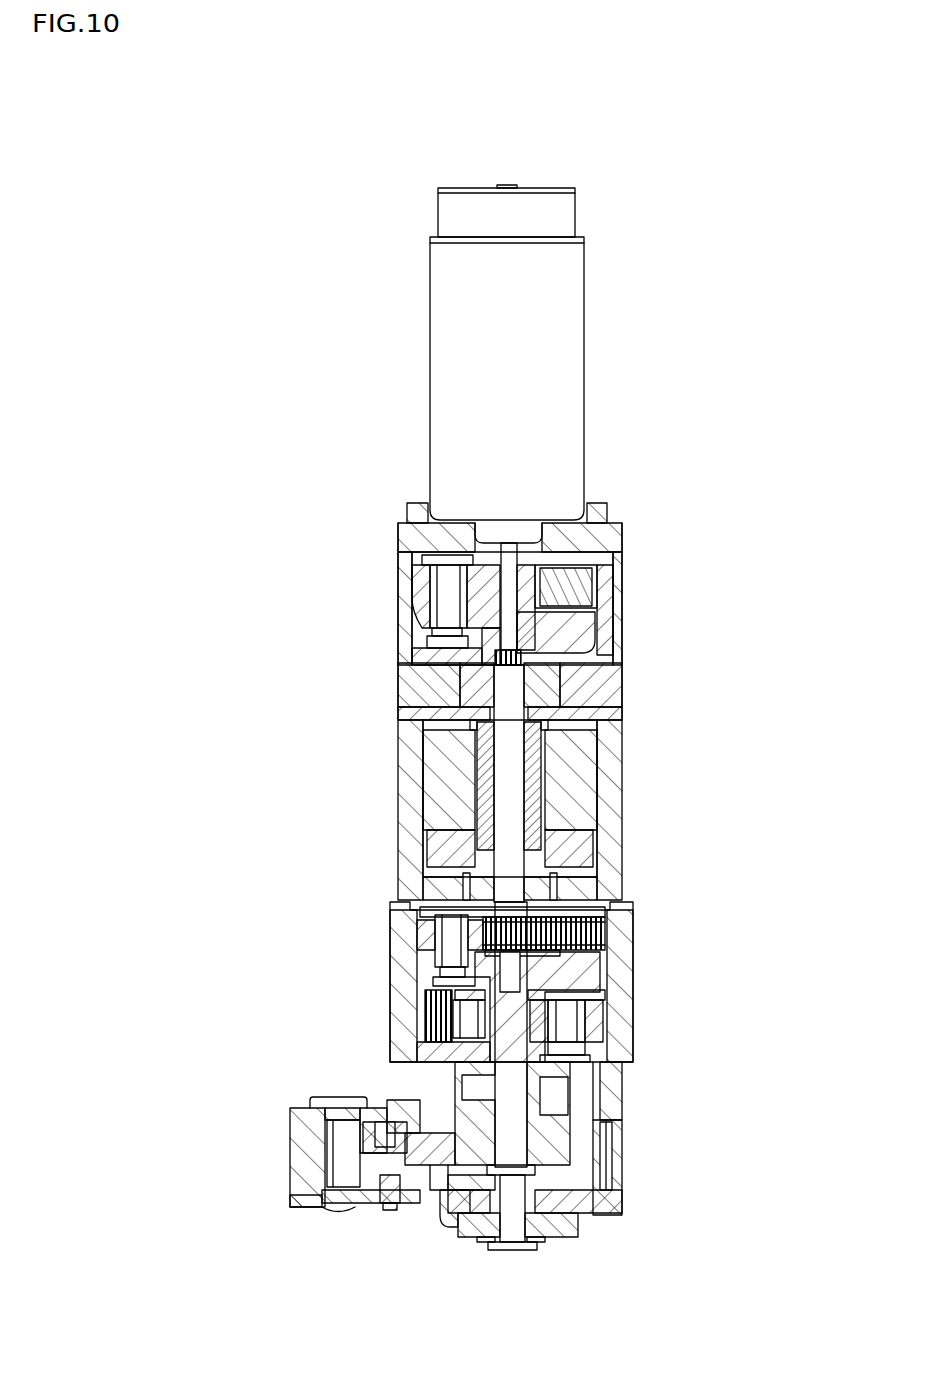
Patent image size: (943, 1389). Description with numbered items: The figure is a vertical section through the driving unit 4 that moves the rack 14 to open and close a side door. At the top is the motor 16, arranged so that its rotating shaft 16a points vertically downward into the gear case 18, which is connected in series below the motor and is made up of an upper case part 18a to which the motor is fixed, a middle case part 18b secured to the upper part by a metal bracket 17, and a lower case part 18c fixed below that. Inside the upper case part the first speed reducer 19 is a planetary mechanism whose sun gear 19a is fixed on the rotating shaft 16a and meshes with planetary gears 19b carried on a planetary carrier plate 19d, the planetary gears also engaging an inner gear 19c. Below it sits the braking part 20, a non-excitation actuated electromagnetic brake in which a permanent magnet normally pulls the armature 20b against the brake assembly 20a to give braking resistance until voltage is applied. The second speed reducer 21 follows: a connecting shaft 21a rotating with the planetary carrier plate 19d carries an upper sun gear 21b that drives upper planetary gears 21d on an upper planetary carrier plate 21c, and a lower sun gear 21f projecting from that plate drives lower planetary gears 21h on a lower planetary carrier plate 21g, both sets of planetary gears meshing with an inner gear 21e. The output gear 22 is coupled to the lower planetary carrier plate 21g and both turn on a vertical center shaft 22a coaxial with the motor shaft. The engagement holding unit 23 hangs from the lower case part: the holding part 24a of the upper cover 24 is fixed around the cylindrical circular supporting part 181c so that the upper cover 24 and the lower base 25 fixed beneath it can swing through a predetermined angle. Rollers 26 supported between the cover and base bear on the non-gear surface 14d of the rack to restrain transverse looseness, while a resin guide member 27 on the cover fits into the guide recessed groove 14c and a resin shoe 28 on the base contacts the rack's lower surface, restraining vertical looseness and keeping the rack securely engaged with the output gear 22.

The driving unit 4 is at (610, 413).
The rack 14 is at (340, 1209).
The guide recessed groove 14c is at (358, 1129).
The non-gear surface 14d is at (358, 1153).
The motor 16 is at (588, 304).
The rotating shaft 16a is at (512, 561).
The bracket 17 is at (618, 711).
The gear case 18 is at (278, 715).
The upper case part 18a is at (397, 662).
The middle case part 18b is at (397, 783).
The lower case part 18c is at (392, 918).
The circular supporting part 181c is at (596, 1150).
The first speed reducer 19 is at (509, 615).
The sun gear 19a is at (585, 580).
The planetary gears 19b is at (405, 580).
The inner gear 19c is at (410, 598).
The planetary carrier plate 19d is at (606, 640).
The braking part 20 is at (576, 799).
The brake assembly 20a is at (590, 750).
The armature 20b is at (588, 853).
The second speed reducer 21 is at (513, 981).
The connecting shaft 21a is at (518, 778).
The upper sun gear 21b is at (517, 933).
The upper planetary carrier plate 21c is at (598, 972).
The upper planetary gears 21d is at (430, 930).
The inner gear 21e is at (425, 984).
The lower sun gear 21f is at (600, 1050).
The lower planetary carrier plate 21g is at (440, 1055).
The lower planetary gears 21h is at (440, 1018).
The output gear 22 is at (578, 1144).
The center shaft 22a is at (545, 1112).
The engagement holding unit 23 is at (585, 1210).
The upper cover 24 is at (620, 1190).
The holding part 24a is at (618, 1168).
The lower base 25 is at (590, 1222).
The rollers 26 is at (340, 1175).
The guide member 27 is at (372, 1110).
The shoe 28 is at (393, 1212).